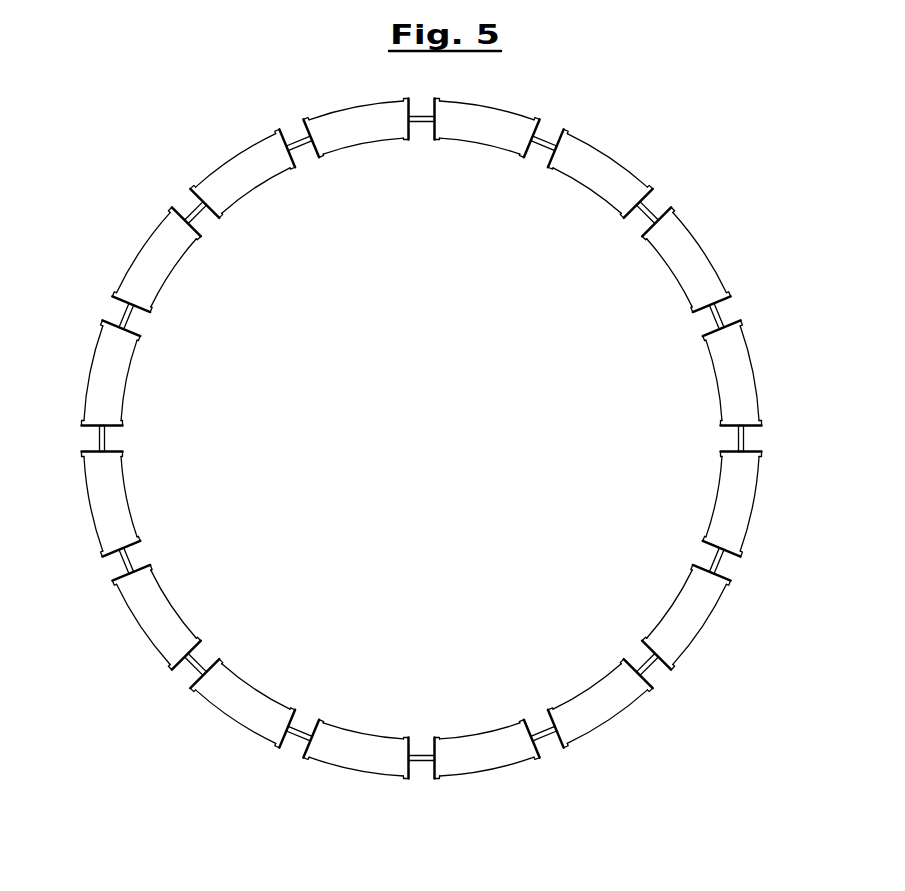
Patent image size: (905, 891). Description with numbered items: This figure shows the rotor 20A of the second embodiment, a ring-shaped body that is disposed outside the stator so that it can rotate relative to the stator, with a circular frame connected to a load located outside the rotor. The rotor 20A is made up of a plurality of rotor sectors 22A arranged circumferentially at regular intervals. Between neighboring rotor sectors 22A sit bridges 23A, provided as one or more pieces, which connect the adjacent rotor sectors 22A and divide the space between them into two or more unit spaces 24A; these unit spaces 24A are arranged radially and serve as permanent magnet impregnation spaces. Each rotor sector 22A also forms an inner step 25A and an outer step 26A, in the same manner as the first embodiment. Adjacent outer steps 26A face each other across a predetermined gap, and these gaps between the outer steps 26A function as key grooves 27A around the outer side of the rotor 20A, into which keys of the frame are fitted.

The rotor 20A is at (620, 138).
The rotor sector 22A is at (703, 620).
The bridge 23A is at (715, 558).
The unit space 24A is at (653, 678).
The inner step 25A is at (433, 738).
The outer step 26A is at (558, 748).
The key groove 27A is at (741, 570).